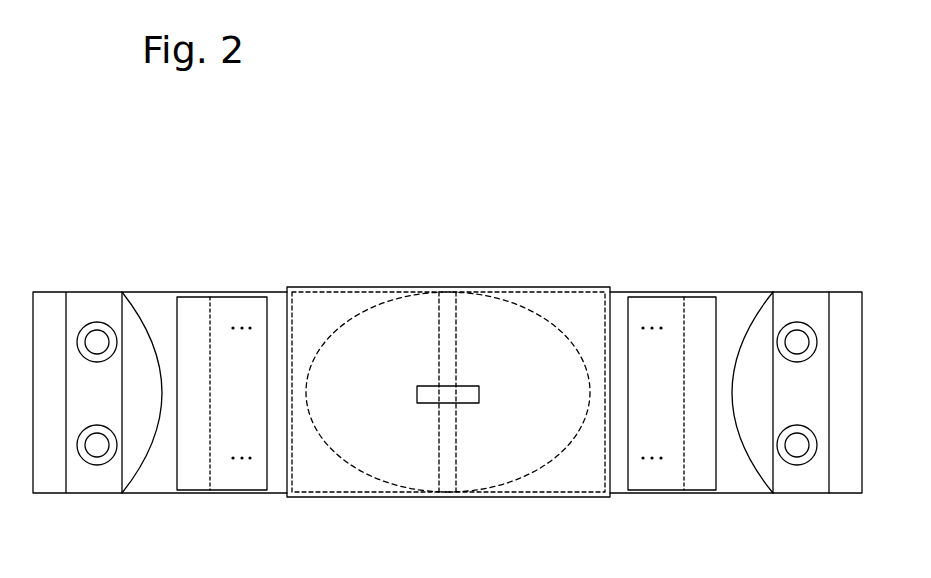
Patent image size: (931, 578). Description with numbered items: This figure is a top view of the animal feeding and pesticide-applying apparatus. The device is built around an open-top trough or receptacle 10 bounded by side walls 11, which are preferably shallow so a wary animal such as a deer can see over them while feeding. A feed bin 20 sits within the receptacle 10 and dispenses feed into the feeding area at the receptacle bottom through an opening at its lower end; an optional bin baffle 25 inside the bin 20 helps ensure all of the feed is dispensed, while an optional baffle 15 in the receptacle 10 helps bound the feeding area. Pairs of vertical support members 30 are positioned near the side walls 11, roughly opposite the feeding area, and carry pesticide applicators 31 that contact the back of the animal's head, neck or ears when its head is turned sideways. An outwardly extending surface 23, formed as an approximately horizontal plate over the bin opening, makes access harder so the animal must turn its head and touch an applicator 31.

The receptacle 10 is at (737, 480).
The side walls 11 is at (665, 293).
The baffle 15 is at (762, 323).
The bin 20 is at (568, 497).
The outwardly extending surface 23 is at (195, 473).
The bin baffle 25 is at (560, 328).
The vertical support members 30 is at (800, 338).
The pesticide applicators 31 is at (812, 349).